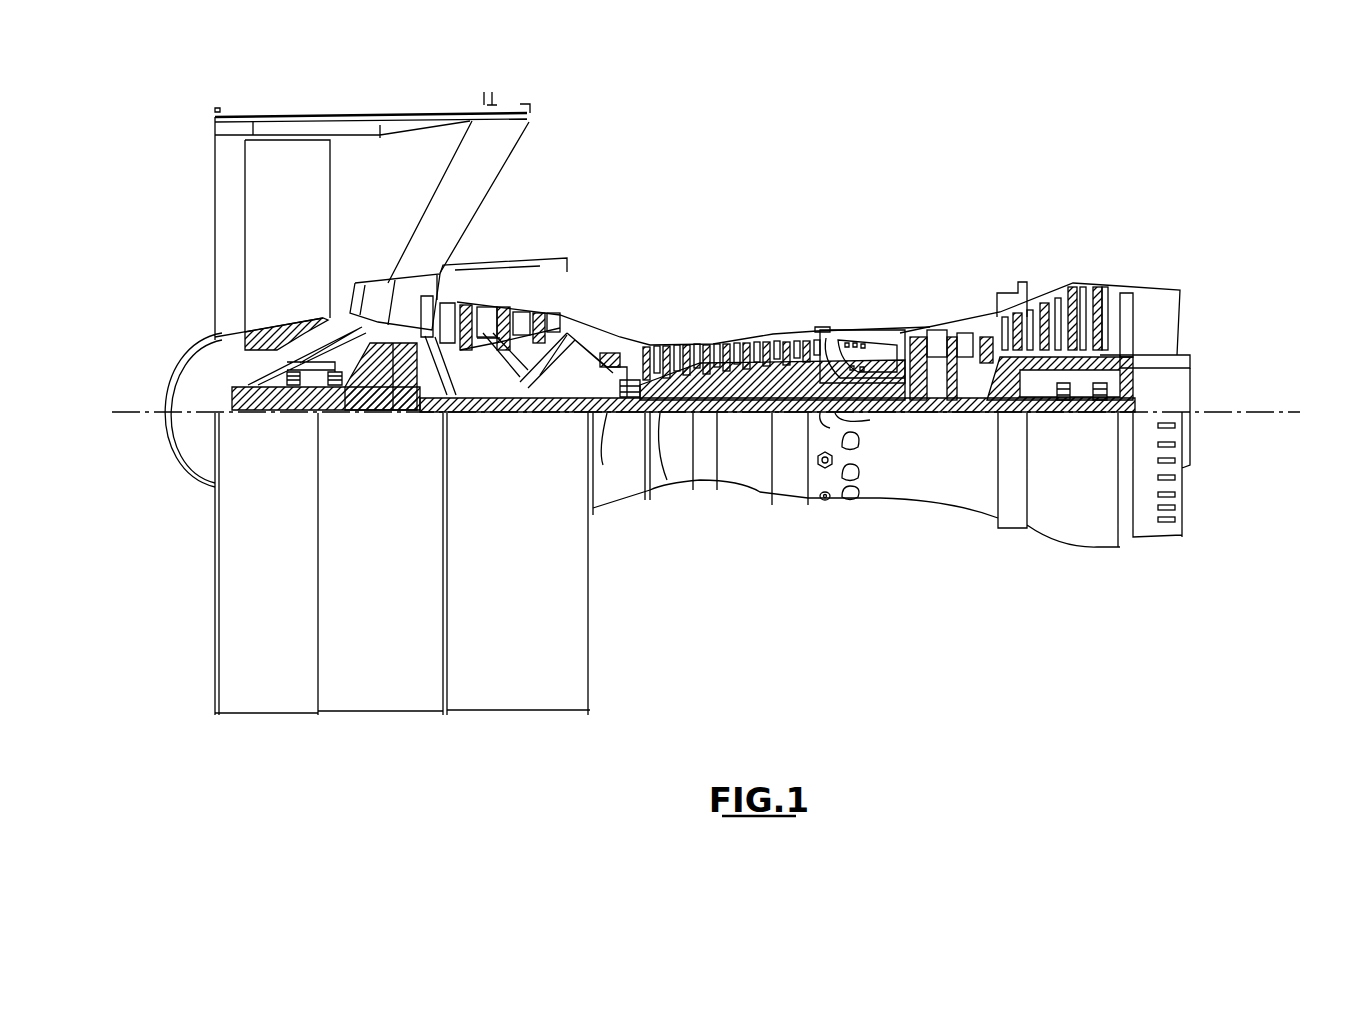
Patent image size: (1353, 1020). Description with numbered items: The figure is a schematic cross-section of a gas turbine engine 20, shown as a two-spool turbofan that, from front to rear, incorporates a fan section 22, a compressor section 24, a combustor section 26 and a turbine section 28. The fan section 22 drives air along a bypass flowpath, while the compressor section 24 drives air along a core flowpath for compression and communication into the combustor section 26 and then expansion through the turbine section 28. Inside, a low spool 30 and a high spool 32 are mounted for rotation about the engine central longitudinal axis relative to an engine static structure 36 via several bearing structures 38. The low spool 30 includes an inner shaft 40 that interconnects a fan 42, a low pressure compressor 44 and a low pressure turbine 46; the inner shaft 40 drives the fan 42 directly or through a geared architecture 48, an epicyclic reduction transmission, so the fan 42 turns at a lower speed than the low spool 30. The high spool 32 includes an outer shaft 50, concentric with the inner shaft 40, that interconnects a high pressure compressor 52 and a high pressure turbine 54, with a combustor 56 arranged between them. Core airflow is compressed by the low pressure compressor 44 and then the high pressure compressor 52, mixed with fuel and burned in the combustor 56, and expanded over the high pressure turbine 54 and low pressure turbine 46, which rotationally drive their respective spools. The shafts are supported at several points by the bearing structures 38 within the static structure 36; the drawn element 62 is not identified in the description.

The gas turbine engine 20 is at (963, 160).
The fan section 22 is at (443, 91).
The compressor section 24 is at (453, 222).
The combustor section 26 is at (815, 222).
The turbine section 28 is at (1127, 222).
The low spool 30 is at (747, 420).
The high spool 32 is at (796, 367).
The engine static structure 36 is at (790, 507).
The bearing structures 38 is at (923, 288).
The inner shaft 40 is at (615, 415).
The fan 42 is at (297, 252).
The low pressure compressor 44 is at (520, 310).
The low pressure turbine 46 is at (1067, 290).
The geared architecture 48 is at (410, 395).
The outer shaft 50 is at (868, 418).
The high pressure compressor 52 is at (722, 385).
The high pressure turbine 54 is at (936, 327).
The combustor 56 is at (865, 353).
The bearing support 62 is at (665, 478).